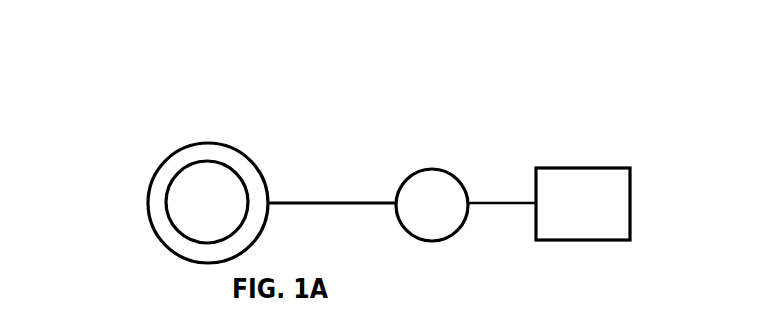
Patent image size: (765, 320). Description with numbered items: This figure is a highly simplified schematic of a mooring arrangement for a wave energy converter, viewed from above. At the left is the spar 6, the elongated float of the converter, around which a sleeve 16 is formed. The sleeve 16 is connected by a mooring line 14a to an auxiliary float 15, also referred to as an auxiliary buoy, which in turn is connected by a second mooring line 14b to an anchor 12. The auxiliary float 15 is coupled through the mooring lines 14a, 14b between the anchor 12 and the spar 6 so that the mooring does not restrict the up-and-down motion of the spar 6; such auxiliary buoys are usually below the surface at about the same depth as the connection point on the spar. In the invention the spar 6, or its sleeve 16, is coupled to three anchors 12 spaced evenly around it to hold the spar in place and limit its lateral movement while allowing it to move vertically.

The sleeve 16 is at (178, 141).
The spar 6 is at (166, 224).
The mooring line 14a is at (327, 199).
The auxiliary float 15 is at (428, 160).
The mooring line 14b is at (502, 195).
The anchor 12 is at (607, 157).